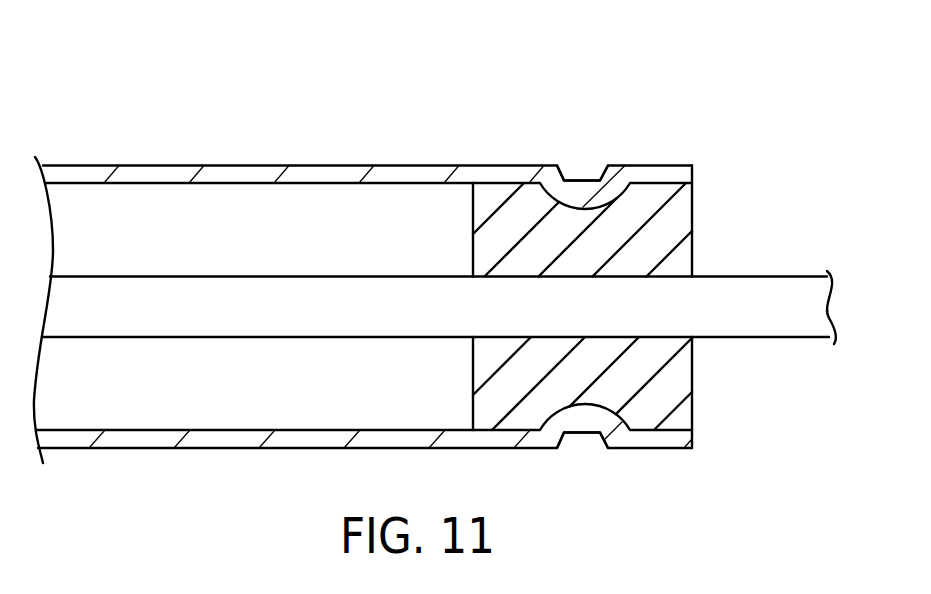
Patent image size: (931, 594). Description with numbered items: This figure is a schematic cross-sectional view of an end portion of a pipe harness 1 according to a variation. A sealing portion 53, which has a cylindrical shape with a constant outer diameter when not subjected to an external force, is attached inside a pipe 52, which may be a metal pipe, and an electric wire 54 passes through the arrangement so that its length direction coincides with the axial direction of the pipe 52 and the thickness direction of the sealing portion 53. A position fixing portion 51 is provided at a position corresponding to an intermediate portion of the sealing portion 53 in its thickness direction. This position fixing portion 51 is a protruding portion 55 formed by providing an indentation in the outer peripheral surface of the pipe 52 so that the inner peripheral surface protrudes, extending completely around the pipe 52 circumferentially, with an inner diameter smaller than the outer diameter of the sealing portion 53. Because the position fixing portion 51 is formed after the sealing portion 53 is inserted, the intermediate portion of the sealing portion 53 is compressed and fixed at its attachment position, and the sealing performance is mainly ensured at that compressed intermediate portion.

The pipe harness 1 is at (150, 88).
The position fixing portion 51 is at (578, 180).
The pipe 52 is at (225, 165).
The sealing portion 53 is at (676, 215).
The electric wire 54 is at (793, 276).
The protruding portion 55 is at (577, 270).